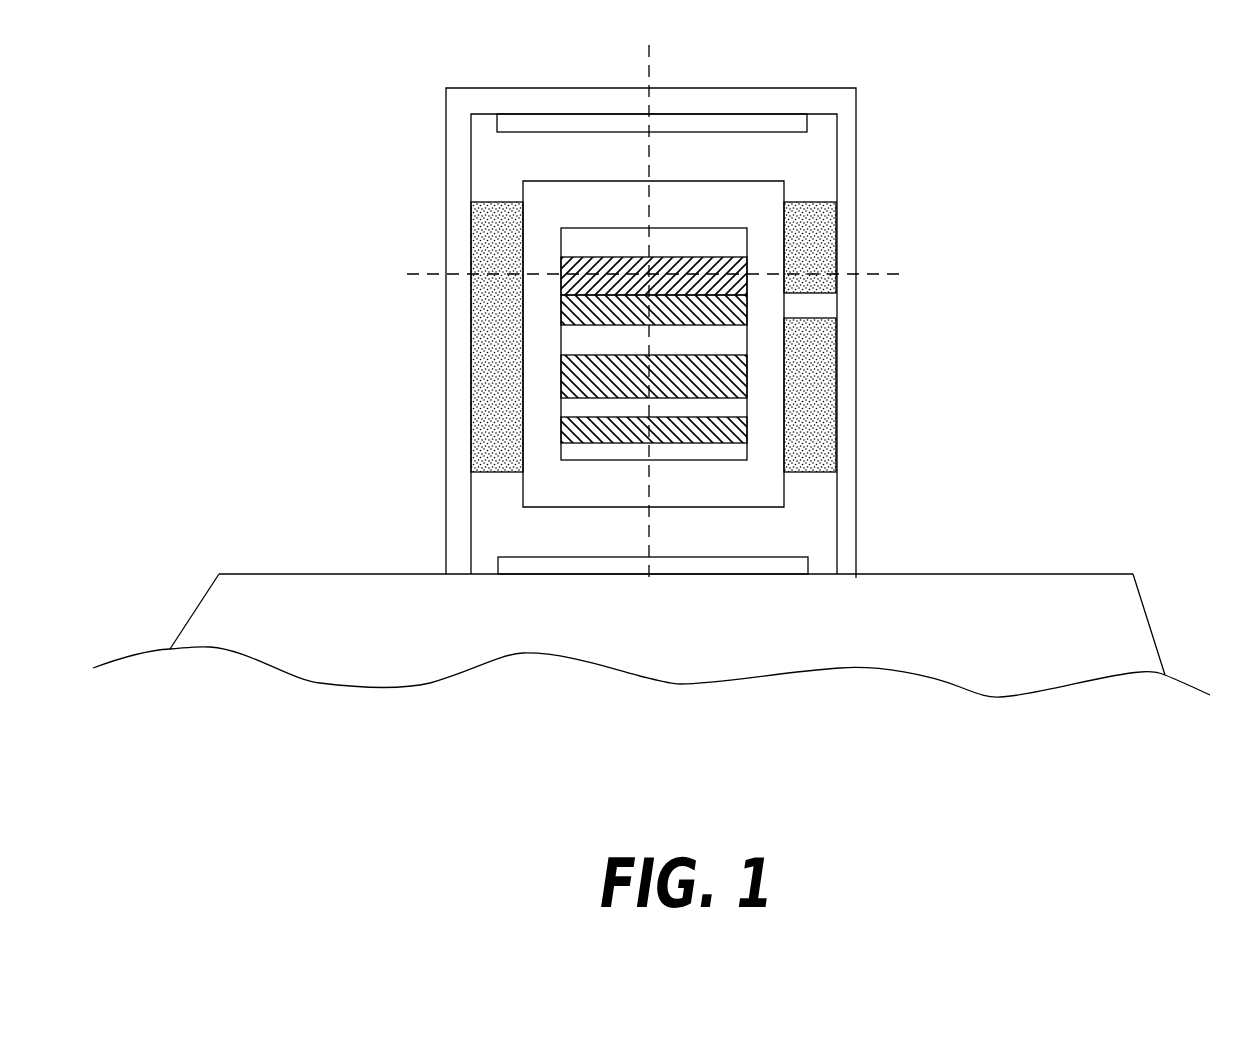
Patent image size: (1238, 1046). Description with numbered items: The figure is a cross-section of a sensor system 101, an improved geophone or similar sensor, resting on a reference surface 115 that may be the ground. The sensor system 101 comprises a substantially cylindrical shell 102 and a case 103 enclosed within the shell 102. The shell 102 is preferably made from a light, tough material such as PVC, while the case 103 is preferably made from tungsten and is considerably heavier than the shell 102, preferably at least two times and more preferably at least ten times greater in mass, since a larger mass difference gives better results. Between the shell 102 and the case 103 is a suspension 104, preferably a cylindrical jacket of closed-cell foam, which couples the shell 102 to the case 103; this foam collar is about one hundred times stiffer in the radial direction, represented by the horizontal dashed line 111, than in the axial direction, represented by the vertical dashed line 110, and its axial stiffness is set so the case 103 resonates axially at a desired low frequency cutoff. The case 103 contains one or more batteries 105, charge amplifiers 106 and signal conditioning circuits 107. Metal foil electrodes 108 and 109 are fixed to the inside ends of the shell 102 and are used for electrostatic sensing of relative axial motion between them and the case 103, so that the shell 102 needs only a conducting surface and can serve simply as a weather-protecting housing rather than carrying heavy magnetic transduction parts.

The sensor system 101 is at (618, 301).
The shell 102 is at (446, 103).
The case 103 is at (784, 242).
The suspension 104 is at (483, 288).
The batteries 105 is at (747, 432).
The charge amplifiers 106 is at (742, 286).
The signal conditioning circuits 107 is at (560, 303).
The metal foil electrode 108 is at (808, 119).
The metal foil electrode 109 is at (810, 565).
The dashed line representing the axial direction 110 is at (650, 90).
The dashed line representing the radial direction 111 is at (407, 274).
The reference surface 115 is at (335, 665).